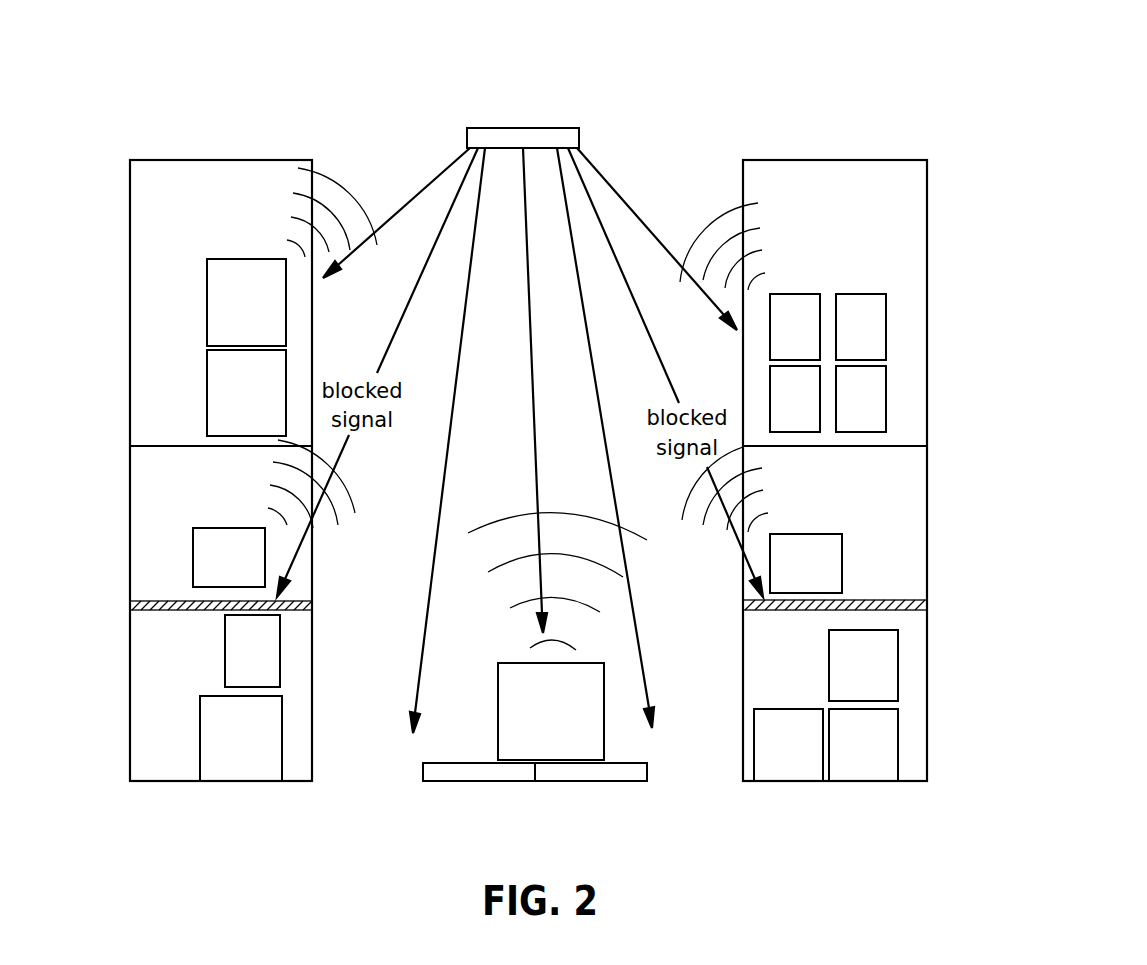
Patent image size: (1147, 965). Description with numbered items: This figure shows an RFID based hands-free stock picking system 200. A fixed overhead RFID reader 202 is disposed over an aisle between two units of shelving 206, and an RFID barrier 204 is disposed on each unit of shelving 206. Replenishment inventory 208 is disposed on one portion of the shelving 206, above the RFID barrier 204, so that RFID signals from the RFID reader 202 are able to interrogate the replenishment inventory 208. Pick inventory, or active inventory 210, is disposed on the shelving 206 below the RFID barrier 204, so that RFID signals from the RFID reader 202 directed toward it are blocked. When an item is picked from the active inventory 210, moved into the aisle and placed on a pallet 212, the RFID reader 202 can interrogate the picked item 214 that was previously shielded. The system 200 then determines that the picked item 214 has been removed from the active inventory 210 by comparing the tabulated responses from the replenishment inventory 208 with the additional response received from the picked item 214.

The RFID based hands-free stock picking system 200 is at (840, 29).
The RFID reader 202 is at (579, 139).
The RFID barrier 204 is at (130, 604).
The shelving 206 is at (184, 159).
The replenishment inventory 208 is at (207, 328).
The active inventory 210 is at (225, 655).
The pallet 212 is at (585, 773).
The picked item 214 is at (513, 697).